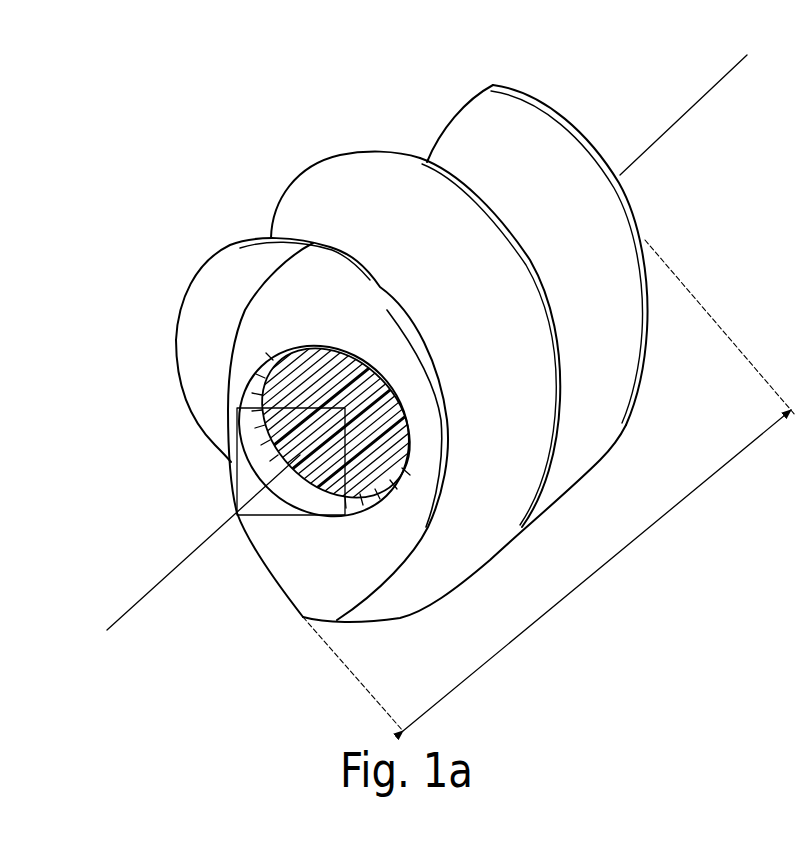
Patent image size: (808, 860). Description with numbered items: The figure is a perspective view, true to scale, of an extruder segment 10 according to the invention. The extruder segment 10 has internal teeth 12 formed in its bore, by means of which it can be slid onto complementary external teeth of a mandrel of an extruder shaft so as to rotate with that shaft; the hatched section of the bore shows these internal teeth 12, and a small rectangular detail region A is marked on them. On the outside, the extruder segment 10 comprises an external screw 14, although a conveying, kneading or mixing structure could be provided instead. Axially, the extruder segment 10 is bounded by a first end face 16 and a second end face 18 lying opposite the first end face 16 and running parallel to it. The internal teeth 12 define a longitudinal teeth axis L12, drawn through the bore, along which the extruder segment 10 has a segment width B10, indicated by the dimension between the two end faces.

The extruder segment 10 is at (360, 320).
The internal teeth 12 is at (392, 492).
The external screw 14 is at (408, 114).
The first end face 16 is at (401, 430).
The second end face 18 is at (570, 87).
The detail area A is at (232, 468).
The longitudinal teeth axis L12 is at (695, 101).
The segment width B10 is at (549, 485).